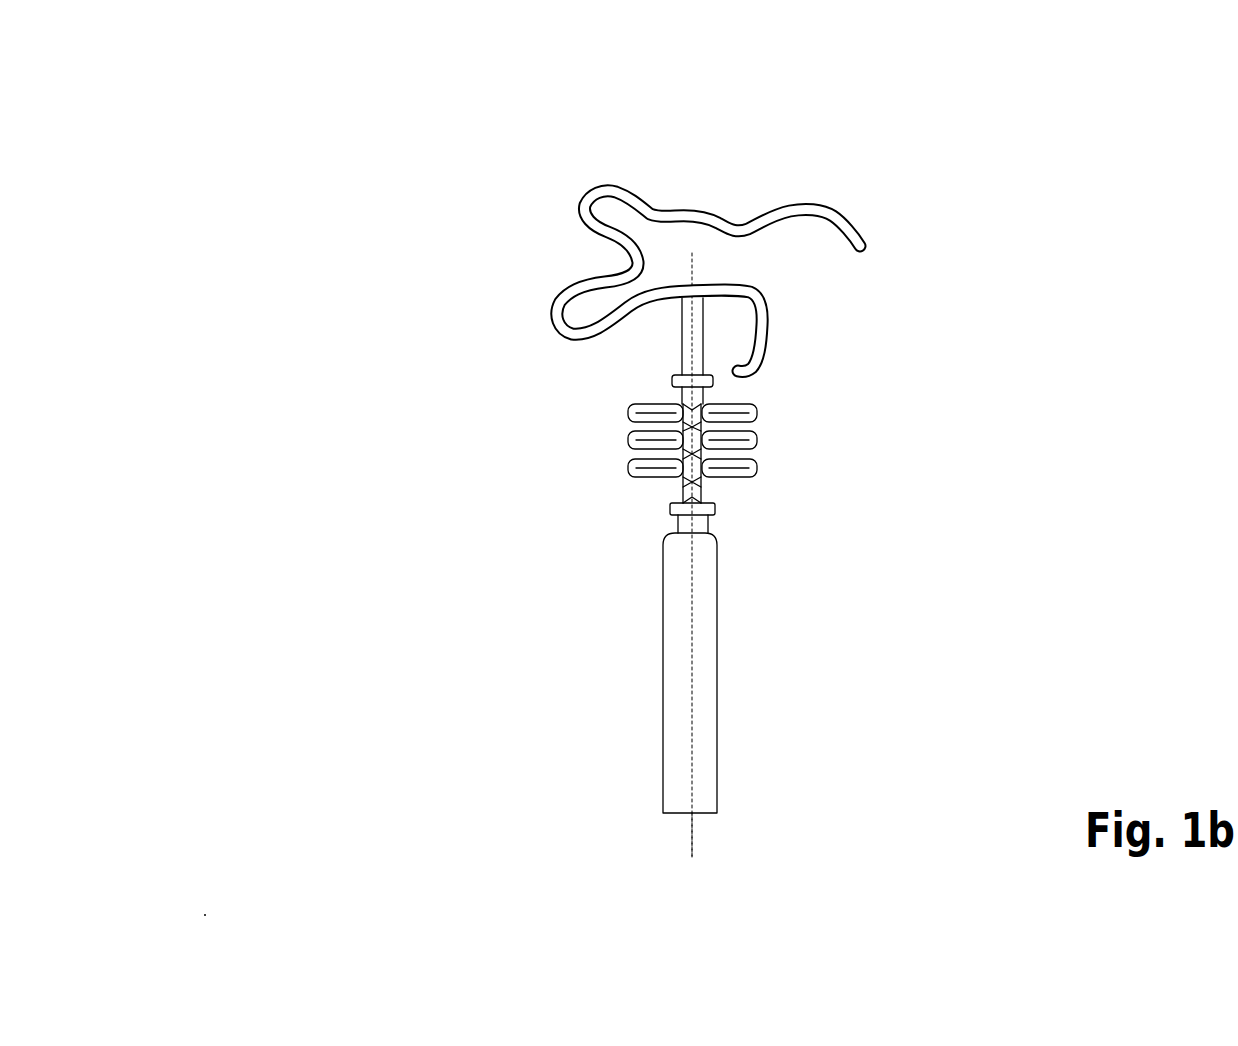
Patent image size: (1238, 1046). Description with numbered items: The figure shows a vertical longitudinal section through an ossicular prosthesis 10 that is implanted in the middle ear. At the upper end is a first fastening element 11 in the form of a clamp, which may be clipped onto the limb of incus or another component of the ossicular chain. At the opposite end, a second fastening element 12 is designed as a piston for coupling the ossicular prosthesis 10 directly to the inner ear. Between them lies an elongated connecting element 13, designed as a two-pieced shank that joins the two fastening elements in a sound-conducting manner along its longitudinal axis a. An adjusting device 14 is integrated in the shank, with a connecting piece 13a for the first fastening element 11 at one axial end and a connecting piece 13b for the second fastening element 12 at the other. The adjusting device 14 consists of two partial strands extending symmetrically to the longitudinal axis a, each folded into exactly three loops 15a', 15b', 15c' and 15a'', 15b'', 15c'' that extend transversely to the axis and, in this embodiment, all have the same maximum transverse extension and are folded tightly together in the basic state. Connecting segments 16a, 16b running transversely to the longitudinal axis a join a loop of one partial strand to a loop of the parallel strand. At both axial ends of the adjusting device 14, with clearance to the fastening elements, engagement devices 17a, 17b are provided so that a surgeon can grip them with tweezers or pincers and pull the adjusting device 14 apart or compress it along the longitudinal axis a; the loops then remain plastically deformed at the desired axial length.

The ossicular prosthesis 10 is at (441, 463).
The first fastening element 11 is at (582, 222).
The second fastening element 12 is at (670, 712).
The elongated connecting element 13 is at (268, 330).
The connecting piece 13a is at (678, 329).
The connecting piece 13b is at (680, 523).
The adjusting device 14 is at (418, 400).
The loop 15a' is at (558, 421).
The loop 15b' is at (558, 457).
The loop 15c' is at (558, 491).
The loop 15a'' is at (807, 405).
The loop 15b'' is at (807, 448).
The loop 15c'' is at (807, 484).
The connecting segment 16a is at (697, 428).
The connecting segment 16b is at (700, 475).
The engagement device 17a is at (672, 377).
The engagement device 17b is at (670, 513).
The longitudinal axis a is at (690, 837).